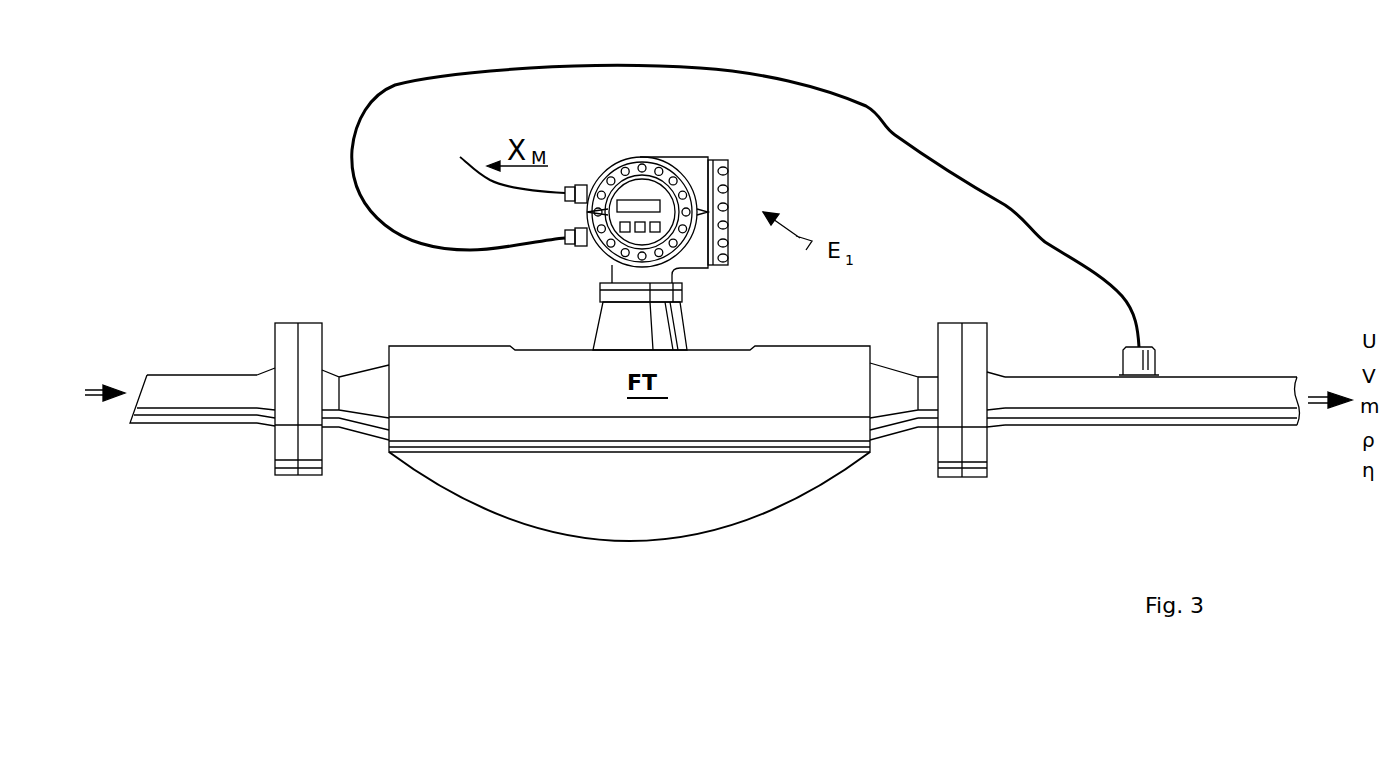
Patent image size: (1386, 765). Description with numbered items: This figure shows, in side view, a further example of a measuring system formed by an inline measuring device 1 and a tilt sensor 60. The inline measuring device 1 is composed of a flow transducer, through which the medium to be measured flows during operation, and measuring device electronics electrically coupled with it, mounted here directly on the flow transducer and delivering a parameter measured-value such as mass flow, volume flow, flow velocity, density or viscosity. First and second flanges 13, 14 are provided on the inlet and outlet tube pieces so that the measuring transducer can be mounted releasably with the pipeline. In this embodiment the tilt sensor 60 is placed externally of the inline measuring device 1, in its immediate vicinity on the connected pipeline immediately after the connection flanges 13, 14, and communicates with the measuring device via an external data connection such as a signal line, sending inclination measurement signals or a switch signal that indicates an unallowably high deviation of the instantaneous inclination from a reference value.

The inline measuring device 1 is at (660, 142).
The first flange 13 is at (307, 469).
The second flange 14 is at (945, 471).
The tilt sensor 60 is at (1153, 347).